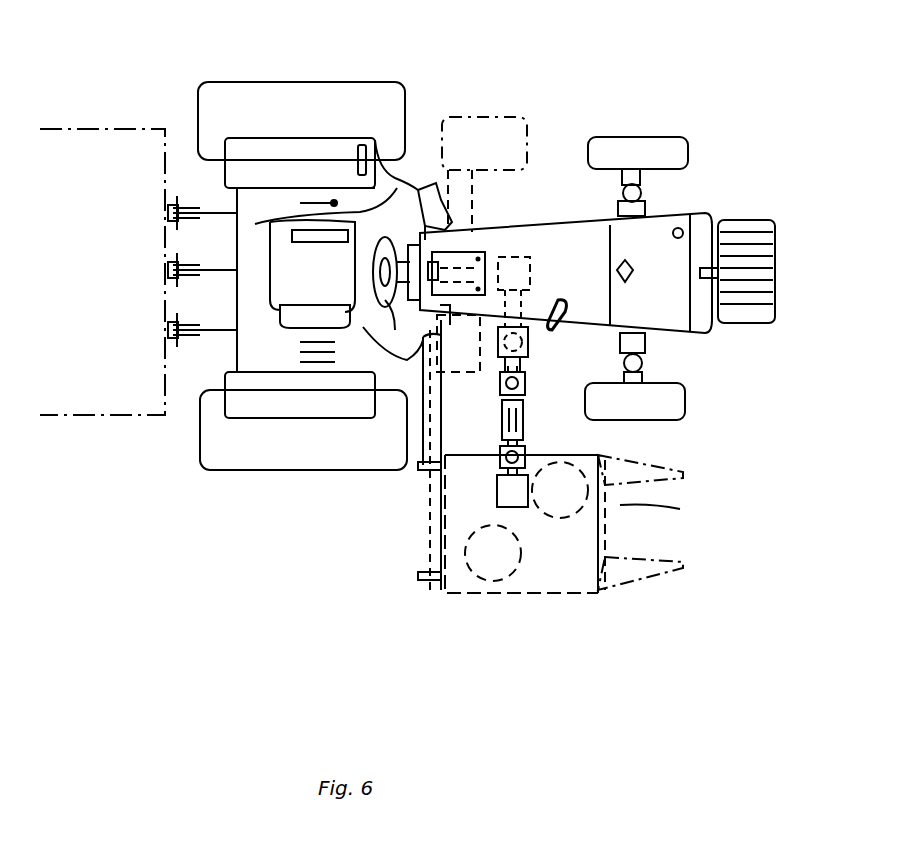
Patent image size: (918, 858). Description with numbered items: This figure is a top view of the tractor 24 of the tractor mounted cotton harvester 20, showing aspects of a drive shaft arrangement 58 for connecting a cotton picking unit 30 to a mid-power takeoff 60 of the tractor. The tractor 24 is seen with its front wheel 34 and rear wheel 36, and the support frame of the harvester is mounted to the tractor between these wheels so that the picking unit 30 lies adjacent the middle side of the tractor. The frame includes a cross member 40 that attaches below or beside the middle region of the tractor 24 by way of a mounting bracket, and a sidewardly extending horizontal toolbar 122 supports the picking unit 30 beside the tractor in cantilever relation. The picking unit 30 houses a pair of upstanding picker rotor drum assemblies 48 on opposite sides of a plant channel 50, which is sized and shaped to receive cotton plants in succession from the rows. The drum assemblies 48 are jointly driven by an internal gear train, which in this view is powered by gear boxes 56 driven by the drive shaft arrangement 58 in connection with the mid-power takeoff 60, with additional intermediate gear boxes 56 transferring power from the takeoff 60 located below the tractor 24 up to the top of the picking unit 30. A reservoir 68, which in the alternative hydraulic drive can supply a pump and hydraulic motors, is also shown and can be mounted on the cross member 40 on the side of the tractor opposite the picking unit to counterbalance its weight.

The tractor mounted cotton harvester 20 is at (378, 578).
The tractor 24 is at (710, 206).
The cotton picking unit 30 is at (583, 598).
The front wheel 34 is at (690, 395).
The rear wheel 36 is at (232, 82).
The cross member 40 is at (475, 197).
The picker rotor drum assembly 48 is at (473, 575).
The plant channel 50 is at (690, 508).
The gear box 56 is at (530, 348).
The drive shaft arrangement 58 is at (525, 404).
The mid-power takeoff 60 is at (525, 258).
The reservoir 68 is at (460, 117).
The horizontal toolbar 122 is at (425, 556).